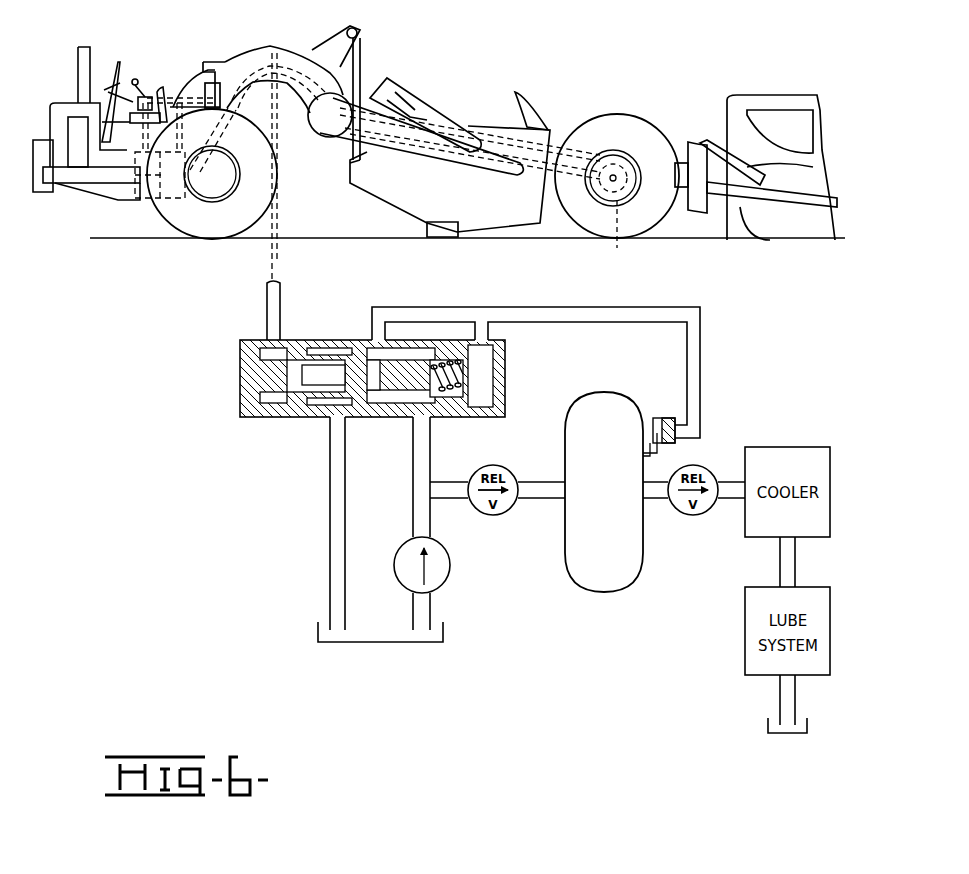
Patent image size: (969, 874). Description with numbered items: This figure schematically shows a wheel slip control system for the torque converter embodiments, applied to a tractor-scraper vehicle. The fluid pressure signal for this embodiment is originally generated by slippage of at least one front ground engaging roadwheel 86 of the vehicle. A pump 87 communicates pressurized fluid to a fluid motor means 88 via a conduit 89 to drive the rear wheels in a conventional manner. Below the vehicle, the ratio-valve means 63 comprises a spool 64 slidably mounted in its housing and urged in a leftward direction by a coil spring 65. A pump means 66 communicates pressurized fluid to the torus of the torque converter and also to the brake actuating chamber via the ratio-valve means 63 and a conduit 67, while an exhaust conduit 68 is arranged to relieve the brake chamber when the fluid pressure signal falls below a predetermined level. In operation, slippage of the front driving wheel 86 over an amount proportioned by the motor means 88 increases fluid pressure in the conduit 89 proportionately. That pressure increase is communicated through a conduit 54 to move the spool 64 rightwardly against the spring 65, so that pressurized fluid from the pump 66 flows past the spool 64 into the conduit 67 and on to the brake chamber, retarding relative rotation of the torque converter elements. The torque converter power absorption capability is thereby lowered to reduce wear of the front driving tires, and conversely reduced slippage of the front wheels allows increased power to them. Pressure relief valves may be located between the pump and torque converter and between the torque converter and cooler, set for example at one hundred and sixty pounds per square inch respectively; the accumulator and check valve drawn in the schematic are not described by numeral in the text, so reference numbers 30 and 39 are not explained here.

The accumulator 30 is at (624, 508).
The check valve 39 is at (657, 415).
The conduit 54 is at (280, 297).
The ratio-valve means 63 is at (331, 398).
The spool 64 is at (353, 410).
The coil spring 65 is at (500, 395).
The pump means 66 is at (443, 572).
The conduit 67 is at (682, 312).
The exhaust conduit 68 is at (333, 577).
The front ground engaging roadwheel 86 is at (212, 227).
The pump 87 is at (190, 170).
The fluid motor means 88 is at (623, 250).
The conduit 89 is at (400, 117).